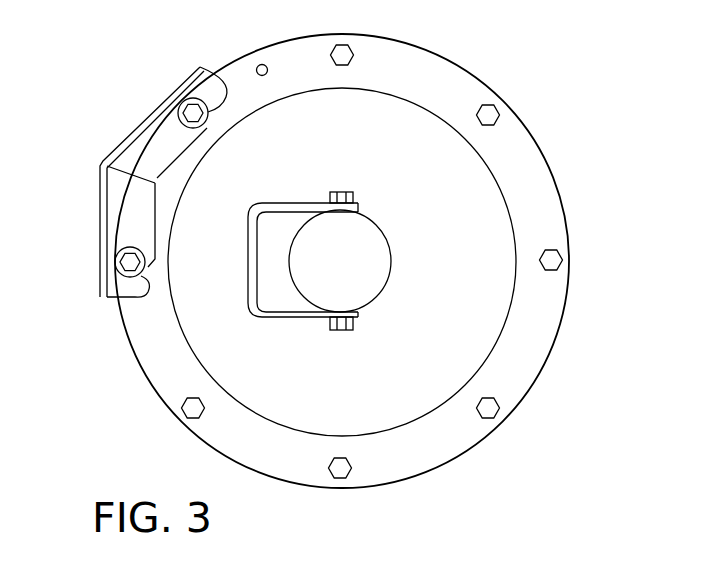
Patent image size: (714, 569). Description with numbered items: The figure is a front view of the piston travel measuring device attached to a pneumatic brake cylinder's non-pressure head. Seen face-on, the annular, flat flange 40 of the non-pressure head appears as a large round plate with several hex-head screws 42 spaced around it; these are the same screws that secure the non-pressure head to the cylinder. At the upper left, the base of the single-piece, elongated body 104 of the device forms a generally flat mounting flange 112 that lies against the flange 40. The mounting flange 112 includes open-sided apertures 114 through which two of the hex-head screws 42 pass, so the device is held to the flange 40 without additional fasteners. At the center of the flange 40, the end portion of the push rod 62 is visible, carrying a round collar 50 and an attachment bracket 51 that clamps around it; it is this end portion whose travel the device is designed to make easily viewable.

The annular flat flange 40 is at (433, 83).
The hex-head screws 42 is at (196, 112).
The collar 50 is at (388, 295).
The attachment bracket 51 is at (290, 318).
The push rod 62 is at (363, 288).
The elongated body 104 is at (143, 161).
The mounting flange 112 is at (157, 146).
The open-sided apertures 114 is at (128, 249).